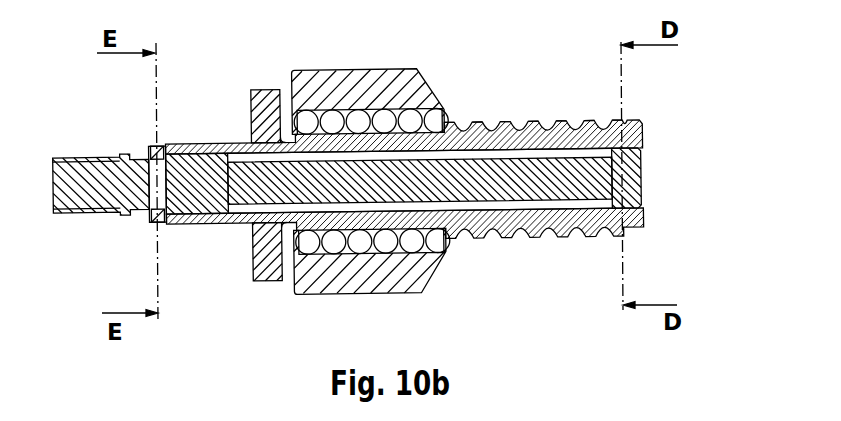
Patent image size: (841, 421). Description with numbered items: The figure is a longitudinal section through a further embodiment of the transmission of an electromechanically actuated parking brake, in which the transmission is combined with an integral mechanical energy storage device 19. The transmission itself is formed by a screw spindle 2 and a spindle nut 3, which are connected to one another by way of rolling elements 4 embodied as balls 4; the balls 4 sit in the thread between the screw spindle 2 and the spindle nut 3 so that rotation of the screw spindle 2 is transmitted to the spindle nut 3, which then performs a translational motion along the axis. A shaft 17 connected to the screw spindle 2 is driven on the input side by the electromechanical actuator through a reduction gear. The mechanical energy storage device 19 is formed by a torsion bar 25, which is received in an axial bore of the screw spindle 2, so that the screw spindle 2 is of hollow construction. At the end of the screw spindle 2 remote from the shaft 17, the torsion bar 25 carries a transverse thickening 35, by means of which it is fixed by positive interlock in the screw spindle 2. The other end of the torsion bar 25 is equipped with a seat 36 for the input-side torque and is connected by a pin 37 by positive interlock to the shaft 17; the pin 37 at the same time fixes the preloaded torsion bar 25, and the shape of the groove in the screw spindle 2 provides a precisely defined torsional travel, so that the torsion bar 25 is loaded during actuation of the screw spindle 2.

The screw spindle 2 is at (527, 137).
The spindle nut 3 is at (387, 83).
The rolling elements 4 is at (358, 118).
The shaft 17 is at (225, 150).
The mechanical energy storage device 19 is at (556, 186).
The torsion bar 25 is at (260, 188).
The transverse thickening 35 is at (627, 183).
The seat 36 is at (83, 197).
The pin 37 is at (150, 156).